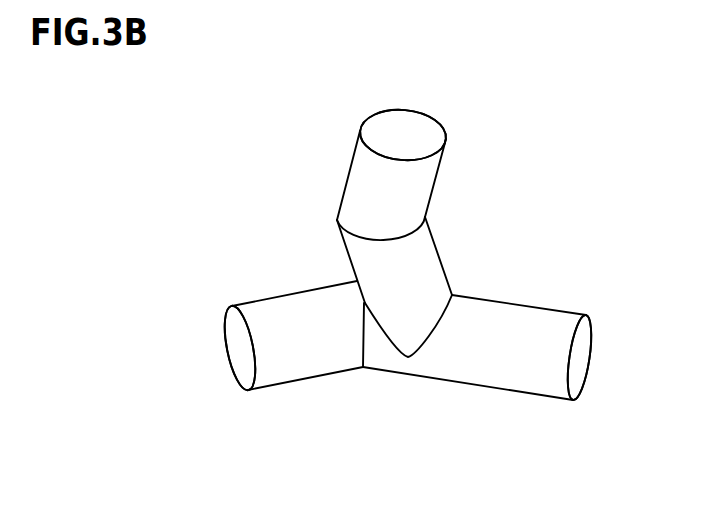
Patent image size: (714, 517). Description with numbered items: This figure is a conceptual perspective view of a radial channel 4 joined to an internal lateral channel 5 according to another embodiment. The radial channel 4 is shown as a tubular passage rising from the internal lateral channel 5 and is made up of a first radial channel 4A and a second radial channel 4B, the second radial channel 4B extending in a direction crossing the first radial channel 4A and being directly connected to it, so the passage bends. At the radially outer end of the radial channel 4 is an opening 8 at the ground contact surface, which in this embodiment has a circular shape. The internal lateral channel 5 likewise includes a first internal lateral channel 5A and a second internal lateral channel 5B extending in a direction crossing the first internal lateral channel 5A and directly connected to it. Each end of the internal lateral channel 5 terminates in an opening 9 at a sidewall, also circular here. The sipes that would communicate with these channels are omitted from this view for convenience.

The radial channel 4 is at (461, 231).
The first radial channel 4A is at (422, 268).
The second radial channel 4B is at (410, 188).
The internal lateral channel 5 is at (407, 390).
The first internal lateral channel 5A is at (305, 347).
The second internal lateral channel 5B is at (479, 375).
The opening 8 is at (402, 133).
The opening 9 is at (240, 348).